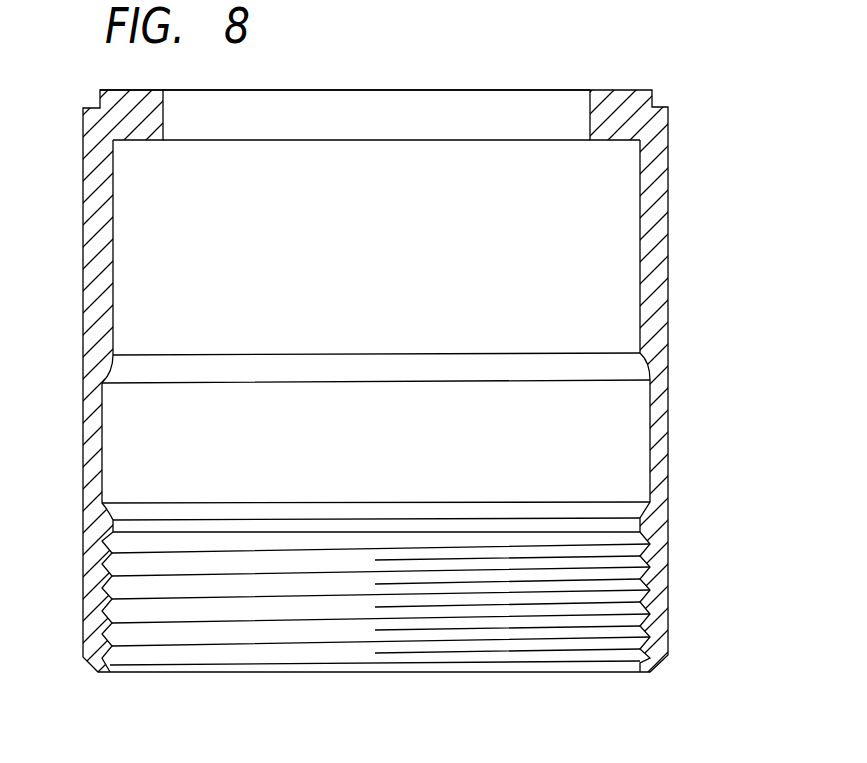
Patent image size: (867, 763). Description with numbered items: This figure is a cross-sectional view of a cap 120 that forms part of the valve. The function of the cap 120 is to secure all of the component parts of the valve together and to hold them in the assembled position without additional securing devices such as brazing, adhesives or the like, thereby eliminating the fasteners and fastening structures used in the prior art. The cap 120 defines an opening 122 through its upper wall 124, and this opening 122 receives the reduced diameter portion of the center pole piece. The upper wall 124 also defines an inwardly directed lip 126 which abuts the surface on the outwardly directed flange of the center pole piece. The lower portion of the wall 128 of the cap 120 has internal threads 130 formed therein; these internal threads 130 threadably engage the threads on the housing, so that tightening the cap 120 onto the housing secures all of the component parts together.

The cap 120 is at (707, 583).
The opening 122 is at (511, 108).
The upper wall 124 is at (612, 89).
The inwardly directed lip 126 is at (613, 140).
The wall 128 is at (90, 358).
The internal threads 130 is at (205, 657).